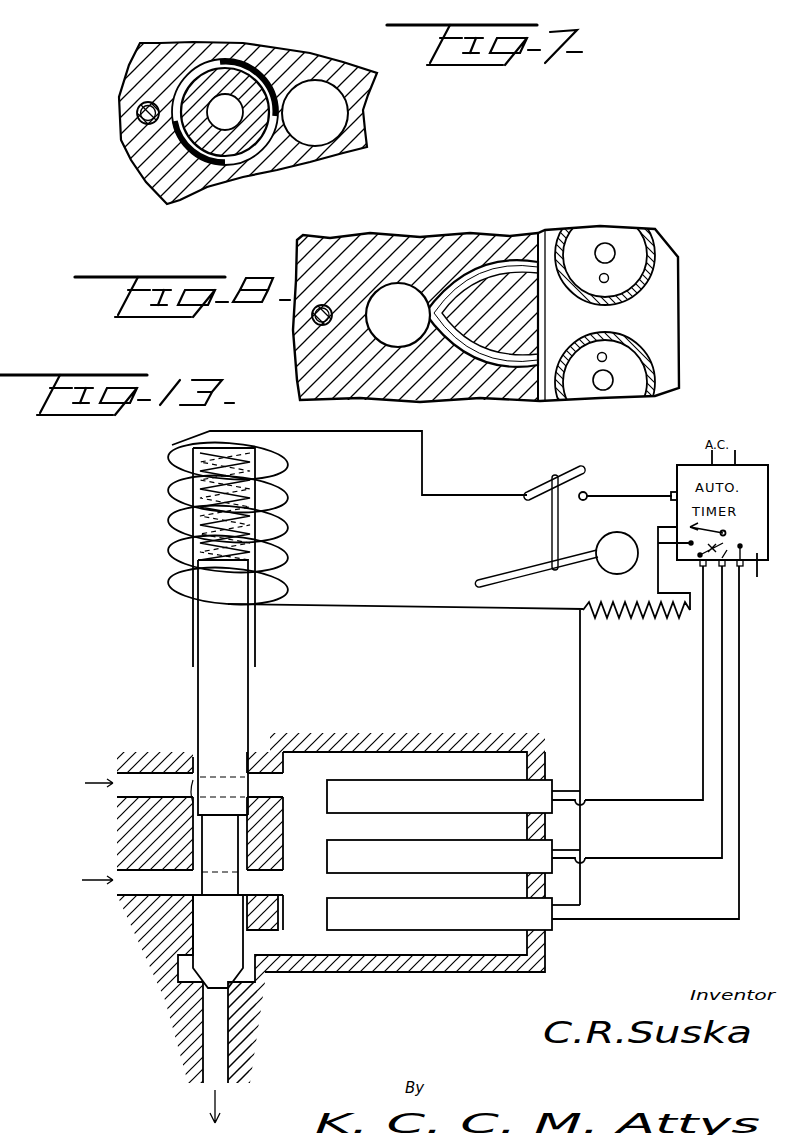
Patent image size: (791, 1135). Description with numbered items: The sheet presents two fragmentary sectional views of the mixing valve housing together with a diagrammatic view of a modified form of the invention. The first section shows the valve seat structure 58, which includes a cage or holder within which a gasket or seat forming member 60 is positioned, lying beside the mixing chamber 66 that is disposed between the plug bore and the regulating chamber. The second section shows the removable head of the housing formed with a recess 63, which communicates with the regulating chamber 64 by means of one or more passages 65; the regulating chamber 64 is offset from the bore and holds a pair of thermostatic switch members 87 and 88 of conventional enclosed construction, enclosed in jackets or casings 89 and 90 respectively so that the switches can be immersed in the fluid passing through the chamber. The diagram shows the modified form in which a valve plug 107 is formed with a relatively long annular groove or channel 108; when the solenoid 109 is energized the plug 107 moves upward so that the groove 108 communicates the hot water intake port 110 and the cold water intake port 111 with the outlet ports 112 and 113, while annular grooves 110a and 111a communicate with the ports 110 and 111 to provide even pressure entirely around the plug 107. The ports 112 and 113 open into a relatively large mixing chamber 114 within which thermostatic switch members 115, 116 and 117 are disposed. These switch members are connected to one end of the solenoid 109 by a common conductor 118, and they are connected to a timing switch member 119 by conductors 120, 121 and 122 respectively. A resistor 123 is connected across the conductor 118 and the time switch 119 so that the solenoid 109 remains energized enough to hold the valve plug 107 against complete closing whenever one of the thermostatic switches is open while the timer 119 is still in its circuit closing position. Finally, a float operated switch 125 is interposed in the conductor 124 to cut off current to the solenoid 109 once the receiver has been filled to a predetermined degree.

In FIG. 7, the valve seat structure 58 is at (228, 163).
In FIG. 7, the seat forming member 60 is at (243, 142).
In FIG. 7, the mixing chamber 66 is at (322, 140).
In FIG. 8, the recess 63 is at (396, 284).
In FIG. 8, the passages 65 is at (482, 263).
In FIG. 8, the thermostatic switch member 87 is at (664, 238).
In FIG. 8, the jacket 89 is at (655, 261).
In FIG. 8, the regulating chamber 64 is at (663, 298).
In FIG. 8, the thermostatic switch member 88 is at (665, 359).
In FIG. 8, the casing 90 is at (650, 392).
In FIG. 13, the valve plug 107 is at (240, 700).
In FIG. 13, the annular groove 108 is at (205, 815).
In FIG. 13, the solenoid 109 is at (285, 528).
In FIG. 13, the hot water intake port 110 is at (148, 785).
In FIG. 13, the annular groove 110a is at (193, 810).
In FIG. 13, the cold water intake port 111 is at (128, 893).
In FIG. 13, the annular groove 111a is at (192, 920).
In FIG. 13, the outlet port 112 is at (265, 788).
In FIG. 13, the outlet port 113 is at (265, 883).
In FIG. 13, the mixing chamber 114 is at (307, 942).
In FIG. 13, the thermostatic switch member 115 is at (440, 786).
In FIG. 13, the thermostatic switch member 116 is at (427, 837).
In FIG. 13, the thermostatic switch member 117 is at (437, 897).
In FIG. 13, the common conductor 118 is at (580, 673).
In FIG. 13, the timing switch member 119 is at (769, 580).
In FIG. 13, the conductor 120 is at (700, 683).
In FIG. 13, the conductor 121 is at (720, 700).
In FIG. 13, the conductor 122 is at (737, 797).
In FIG. 13, the resistor 123 is at (635, 617).
In FIG. 13, the conductor 124 is at (475, 495).
In FIG. 13, the float operated switch 125 is at (572, 468).